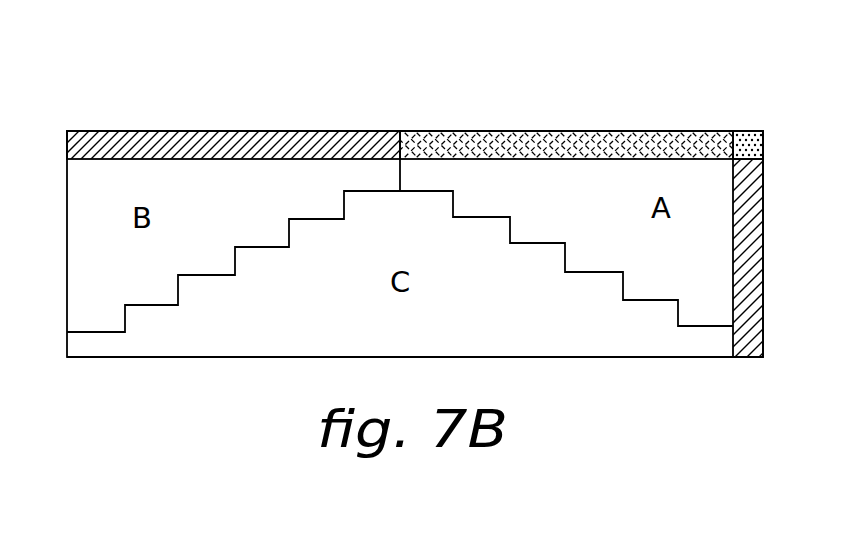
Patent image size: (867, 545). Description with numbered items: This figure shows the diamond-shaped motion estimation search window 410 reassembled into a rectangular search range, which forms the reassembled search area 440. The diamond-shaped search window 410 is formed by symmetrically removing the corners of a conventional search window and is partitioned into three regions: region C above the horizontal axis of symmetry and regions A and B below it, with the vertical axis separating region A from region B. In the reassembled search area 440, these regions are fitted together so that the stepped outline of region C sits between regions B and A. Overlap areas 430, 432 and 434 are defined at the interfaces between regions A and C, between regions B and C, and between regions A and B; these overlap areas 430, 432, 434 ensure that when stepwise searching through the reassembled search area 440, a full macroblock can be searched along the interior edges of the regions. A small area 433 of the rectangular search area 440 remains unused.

The diamond-shaped search window 410 is at (495, 285).
The overlap area 430 is at (572, 131).
The overlap area 432 is at (762, 328).
The unused area 433 is at (746, 131).
The overlap area 434 is at (183, 131).
The reassembled search area 440 is at (554, 358).